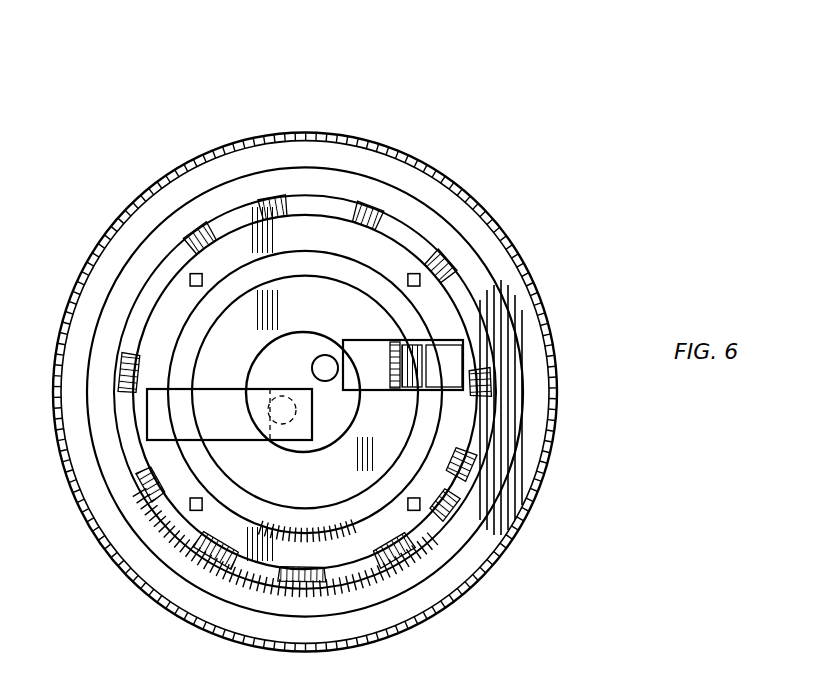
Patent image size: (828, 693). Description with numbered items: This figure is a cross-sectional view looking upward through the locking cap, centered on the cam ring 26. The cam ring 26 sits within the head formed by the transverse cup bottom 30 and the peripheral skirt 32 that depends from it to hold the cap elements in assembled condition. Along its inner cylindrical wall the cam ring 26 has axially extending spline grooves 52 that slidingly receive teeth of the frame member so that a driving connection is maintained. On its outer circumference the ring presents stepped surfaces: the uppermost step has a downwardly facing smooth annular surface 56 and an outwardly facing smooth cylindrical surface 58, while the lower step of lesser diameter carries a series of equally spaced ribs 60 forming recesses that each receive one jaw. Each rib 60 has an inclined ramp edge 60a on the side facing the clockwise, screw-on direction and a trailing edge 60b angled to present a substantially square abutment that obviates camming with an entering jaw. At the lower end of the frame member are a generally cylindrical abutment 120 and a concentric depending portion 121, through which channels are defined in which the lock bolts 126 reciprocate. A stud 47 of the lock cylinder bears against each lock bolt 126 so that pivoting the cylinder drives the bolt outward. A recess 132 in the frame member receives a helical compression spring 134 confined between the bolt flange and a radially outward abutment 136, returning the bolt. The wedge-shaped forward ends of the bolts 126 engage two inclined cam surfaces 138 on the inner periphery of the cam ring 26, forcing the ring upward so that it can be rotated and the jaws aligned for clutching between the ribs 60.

The cam ring 26 is at (105, 420).
The cup bottom 30 is at (93, 315).
The peripheral skirt 32 is at (88, 248).
The studs 47 is at (313, 368).
The spline grooves 52 is at (202, 280).
The annular surface 56 is at (100, 340).
The cylindrical surface 58 is at (148, 277).
The ribs 60 is at (350, 212).
The ramp edge 60a is at (332, 205).
The trailing edge 60b is at (350, 277).
The abutment 120 is at (395, 280).
The depending portion 121 is at (387, 450).
The lock bolts 126 is at (229, 414).
The recess 132 is at (368, 335).
The helical compression spring 134 is at (455, 350).
The abutment 136 is at (432, 381).
The cam surfaces 138 is at (468, 330).